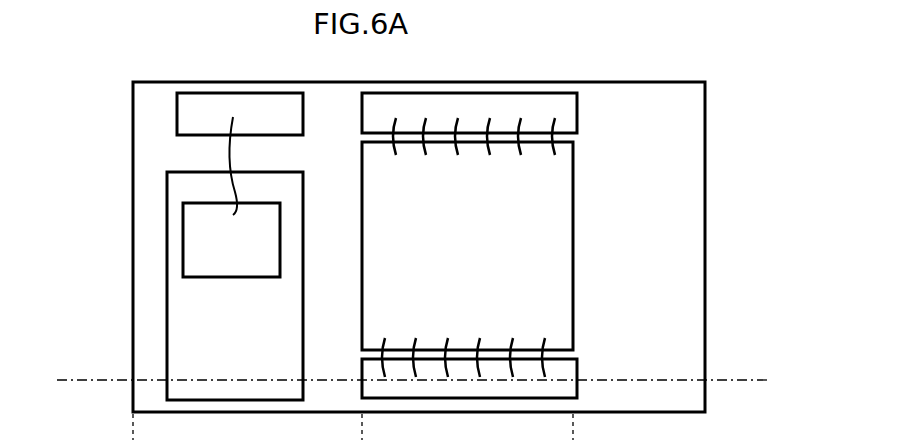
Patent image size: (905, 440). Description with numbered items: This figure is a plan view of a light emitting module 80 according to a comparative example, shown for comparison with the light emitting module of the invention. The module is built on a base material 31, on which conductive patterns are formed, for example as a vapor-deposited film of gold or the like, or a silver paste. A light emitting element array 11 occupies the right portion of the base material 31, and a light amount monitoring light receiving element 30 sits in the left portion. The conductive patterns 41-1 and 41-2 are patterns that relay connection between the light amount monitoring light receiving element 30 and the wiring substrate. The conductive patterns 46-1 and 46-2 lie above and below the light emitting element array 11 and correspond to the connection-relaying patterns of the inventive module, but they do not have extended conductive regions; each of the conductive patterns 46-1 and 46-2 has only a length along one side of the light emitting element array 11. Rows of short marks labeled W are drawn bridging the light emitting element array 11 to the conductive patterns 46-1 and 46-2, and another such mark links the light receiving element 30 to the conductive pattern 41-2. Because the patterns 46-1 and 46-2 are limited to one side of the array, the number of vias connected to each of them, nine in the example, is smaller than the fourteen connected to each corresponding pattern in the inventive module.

The light emitting module 80 is at (436, 240).
The base material 31 is at (705, 223).
The conductive pattern 41-2 is at (177, 118).
The conductive pattern 41-1 is at (167, 300).
The light amount monitoring light receiving element 30 is at (175, 250).
The light emitting element array 11 is at (573, 222).
The conductive pattern 46-2 is at (577, 110).
The conductive pattern 46-1 is at (577, 363).
The wire W is at (392, 122).